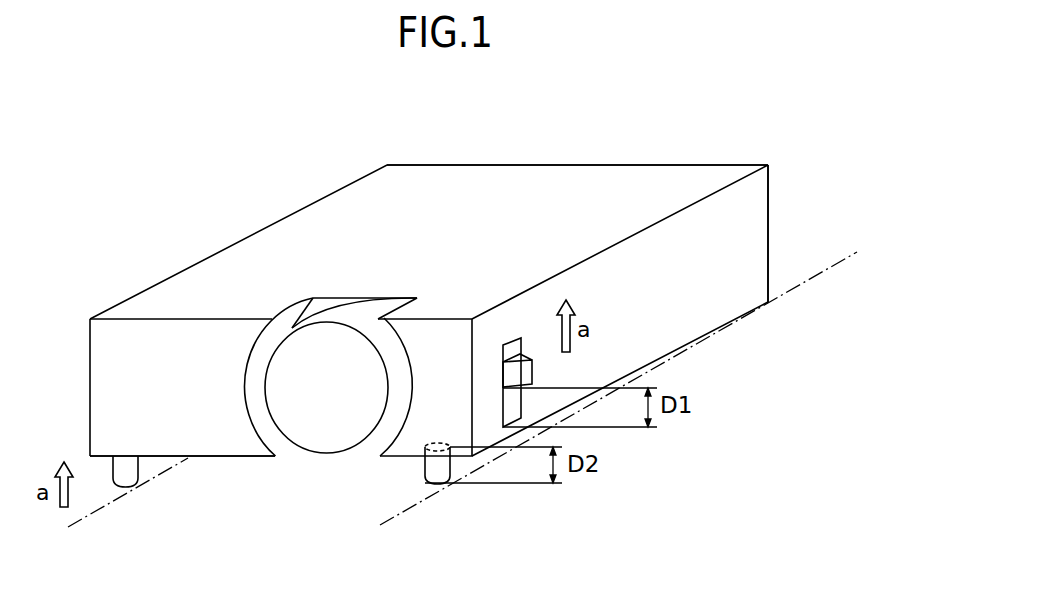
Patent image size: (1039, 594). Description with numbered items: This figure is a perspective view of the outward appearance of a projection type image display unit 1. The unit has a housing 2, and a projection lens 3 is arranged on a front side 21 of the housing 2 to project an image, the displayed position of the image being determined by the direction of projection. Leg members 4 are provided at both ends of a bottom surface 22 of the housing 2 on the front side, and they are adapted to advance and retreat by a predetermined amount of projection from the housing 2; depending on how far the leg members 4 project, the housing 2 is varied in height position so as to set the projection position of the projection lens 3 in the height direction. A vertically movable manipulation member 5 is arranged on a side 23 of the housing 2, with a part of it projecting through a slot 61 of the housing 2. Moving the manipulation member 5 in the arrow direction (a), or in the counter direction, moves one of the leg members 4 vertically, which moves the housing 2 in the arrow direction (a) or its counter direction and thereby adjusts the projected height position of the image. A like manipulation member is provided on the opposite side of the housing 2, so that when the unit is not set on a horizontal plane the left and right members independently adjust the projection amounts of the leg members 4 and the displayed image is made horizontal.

The projection type image display unit 1 is at (505, 133).
The housing 2 is at (640, 182).
The projection lens 3 is at (325, 433).
The leg members 4 is at (118, 470).
The manipulation member 5 is at (529, 356).
The slot 61 is at (510, 408).
The front side 21 is at (203, 443).
The bottom surface 22 is at (247, 467).
The side 23 is at (676, 324).